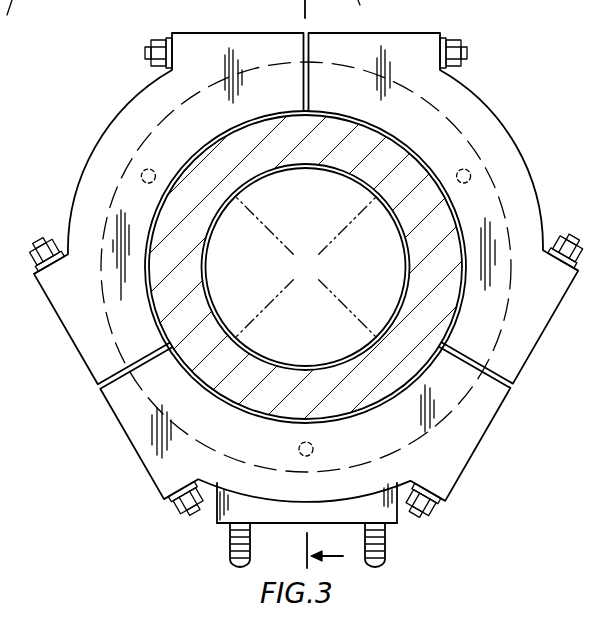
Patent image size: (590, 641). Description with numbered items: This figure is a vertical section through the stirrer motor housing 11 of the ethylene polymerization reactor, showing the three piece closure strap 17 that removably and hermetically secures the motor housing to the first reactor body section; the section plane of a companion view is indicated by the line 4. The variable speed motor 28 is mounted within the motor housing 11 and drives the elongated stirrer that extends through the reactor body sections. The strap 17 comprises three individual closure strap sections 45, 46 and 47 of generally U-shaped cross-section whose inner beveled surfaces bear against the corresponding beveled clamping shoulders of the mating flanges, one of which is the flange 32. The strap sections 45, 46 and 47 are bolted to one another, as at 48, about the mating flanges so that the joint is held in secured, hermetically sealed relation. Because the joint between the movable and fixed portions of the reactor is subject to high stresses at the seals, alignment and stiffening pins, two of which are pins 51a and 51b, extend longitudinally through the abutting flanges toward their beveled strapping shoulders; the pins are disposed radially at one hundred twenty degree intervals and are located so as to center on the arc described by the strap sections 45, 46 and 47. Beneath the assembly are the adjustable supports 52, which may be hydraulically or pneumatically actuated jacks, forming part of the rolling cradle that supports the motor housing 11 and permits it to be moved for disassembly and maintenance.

The section line 4- 4 is at (325, 284).
The stirrer motor housing 11 is at (316, 151).
The strap 17 is at (510, 125).
The variable speed motor 28 is at (321, 269).
The flange 32 is at (499, 217).
The closure strap section 45 is at (92, 304).
The closure strap section 46 is at (460, 461).
The closure strap section 47 is at (557, 304).
The bolts 48 is at (146, 52).
The alignment and stiffening pin 51a is at (298, 444).
The alignment and stiffening pin 51b is at (149, 168).
The adjustable supports 52 is at (228, 530).